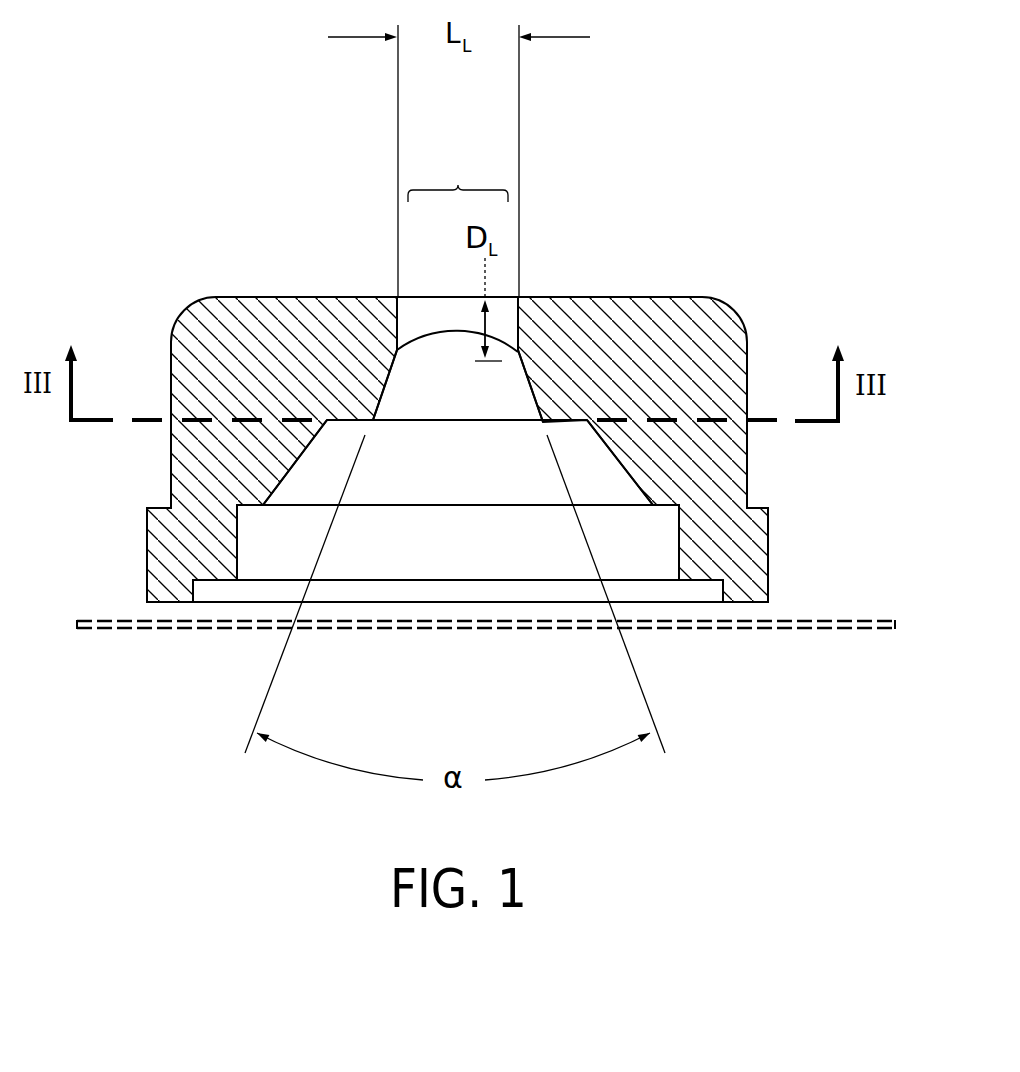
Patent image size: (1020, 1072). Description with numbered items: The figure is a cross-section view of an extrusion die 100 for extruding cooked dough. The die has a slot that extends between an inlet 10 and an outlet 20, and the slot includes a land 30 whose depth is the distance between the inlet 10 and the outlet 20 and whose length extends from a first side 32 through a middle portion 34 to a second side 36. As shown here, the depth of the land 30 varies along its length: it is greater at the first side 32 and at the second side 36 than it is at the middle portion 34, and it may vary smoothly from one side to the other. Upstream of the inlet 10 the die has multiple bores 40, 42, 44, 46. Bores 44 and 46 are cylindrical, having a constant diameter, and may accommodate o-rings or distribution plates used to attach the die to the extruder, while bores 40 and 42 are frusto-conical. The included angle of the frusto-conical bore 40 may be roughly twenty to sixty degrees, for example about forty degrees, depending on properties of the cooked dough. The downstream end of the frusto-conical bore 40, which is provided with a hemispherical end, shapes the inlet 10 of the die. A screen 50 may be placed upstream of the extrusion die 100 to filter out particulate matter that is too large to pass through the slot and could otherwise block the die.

The extrusion die 100 is at (793, 346).
The inlet 10 is at (408, 350).
The outlet 20 is at (423, 297).
The land 30 is at (518, 297).
The first side 32 is at (398, 315).
The middle portion 34 is at (458, 176).
The second side 36 is at (515, 350).
The frusto-conical bore 40 is at (380, 412).
The frusto-conical bore 42 is at (286, 477).
The cylindrical bore 44 is at (679, 538).
The cylindrical bore 46 is at (720, 588).
The screen 50 is at (143, 630).